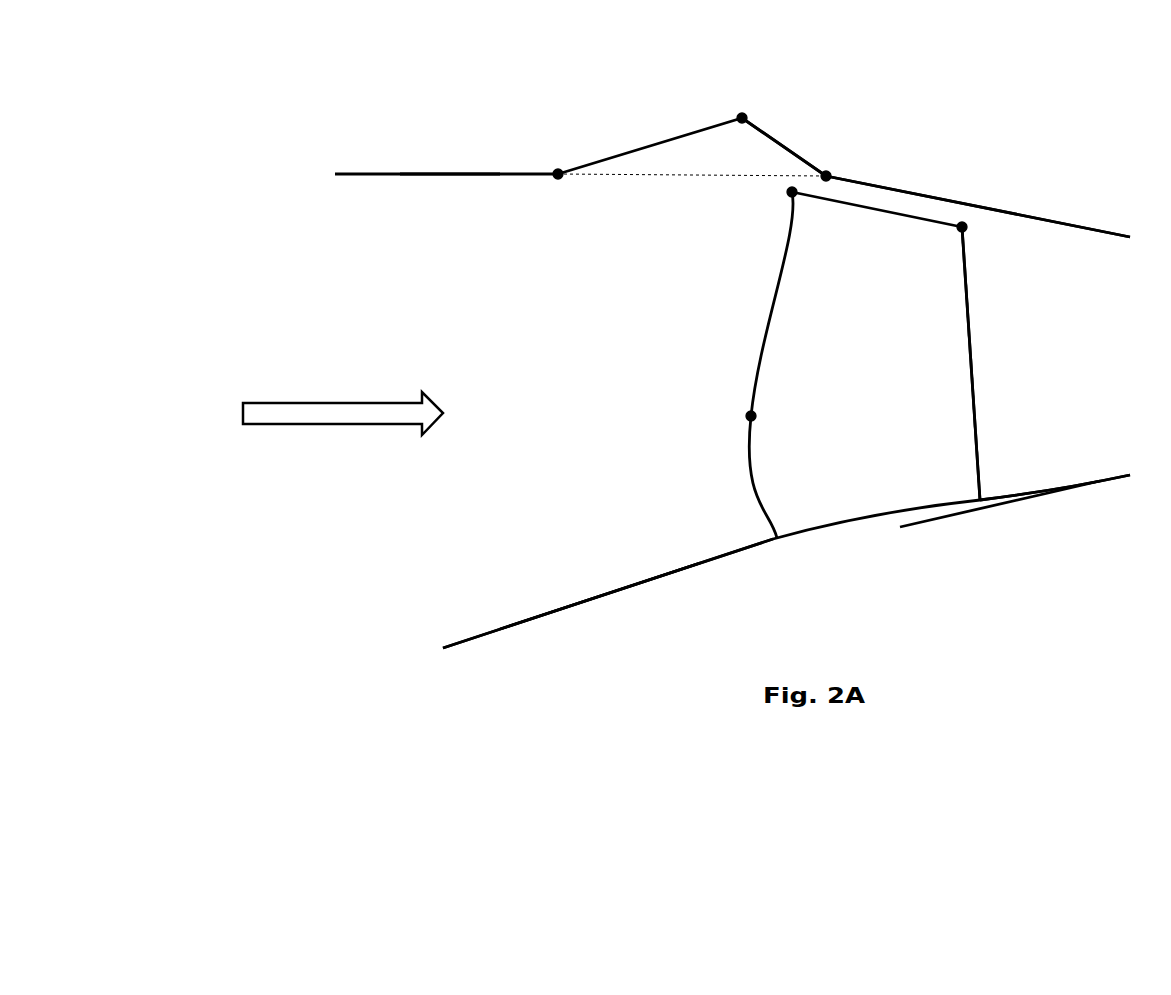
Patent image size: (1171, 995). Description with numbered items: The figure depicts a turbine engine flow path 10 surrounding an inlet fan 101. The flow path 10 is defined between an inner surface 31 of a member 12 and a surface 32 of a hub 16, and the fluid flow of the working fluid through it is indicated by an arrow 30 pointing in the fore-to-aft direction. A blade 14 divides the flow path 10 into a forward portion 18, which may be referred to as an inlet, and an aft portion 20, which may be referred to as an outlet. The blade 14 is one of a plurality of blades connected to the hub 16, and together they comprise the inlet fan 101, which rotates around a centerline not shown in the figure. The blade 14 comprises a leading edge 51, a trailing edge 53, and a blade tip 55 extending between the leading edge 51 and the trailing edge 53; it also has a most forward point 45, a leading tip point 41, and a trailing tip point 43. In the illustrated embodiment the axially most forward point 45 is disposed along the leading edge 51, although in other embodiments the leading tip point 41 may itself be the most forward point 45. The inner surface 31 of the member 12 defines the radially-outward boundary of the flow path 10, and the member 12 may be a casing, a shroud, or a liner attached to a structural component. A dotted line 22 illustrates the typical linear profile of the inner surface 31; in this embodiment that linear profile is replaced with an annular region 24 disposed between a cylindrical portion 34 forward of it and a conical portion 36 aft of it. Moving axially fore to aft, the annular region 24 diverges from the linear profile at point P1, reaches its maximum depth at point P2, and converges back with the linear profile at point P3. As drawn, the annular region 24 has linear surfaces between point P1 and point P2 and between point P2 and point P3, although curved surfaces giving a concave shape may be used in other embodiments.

The turbine engine flow path 10 is at (364, 93).
The member 12 is at (881, 113).
The blade 14 is at (871, 342).
The hub 16 is at (866, 595).
The forward portion 18 is at (566, 340).
The aft portion 20 is at (1063, 361).
The dotted line 22 is at (676, 188).
The annular region 24 is at (694, 153).
The arrow 30 is at (343, 399).
The inner surface 31 is at (443, 191).
The surface 32 is at (557, 595).
The cylindrical portion 34 is at (368, 160).
The conical portion 36 is at (1052, 201).
The leading tip point 41 is at (772, 201).
The trailing tip point 43 is at (982, 236).
The most forward point 45 is at (729, 412).
The leading edge 51 is at (749, 479).
The trailing edge 53 is at (990, 439).
The blade tip 55 is at (911, 200).
The inlet fan 101 is at (994, 557).
The point P1 is at (547, 160).
The point P2 is at (741, 104).
The point P3 is at (841, 163).